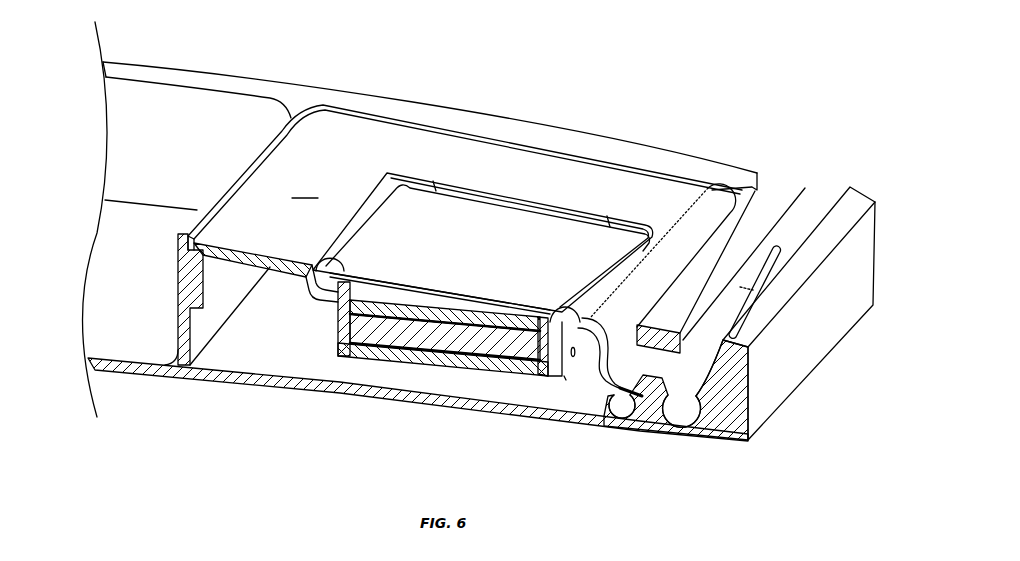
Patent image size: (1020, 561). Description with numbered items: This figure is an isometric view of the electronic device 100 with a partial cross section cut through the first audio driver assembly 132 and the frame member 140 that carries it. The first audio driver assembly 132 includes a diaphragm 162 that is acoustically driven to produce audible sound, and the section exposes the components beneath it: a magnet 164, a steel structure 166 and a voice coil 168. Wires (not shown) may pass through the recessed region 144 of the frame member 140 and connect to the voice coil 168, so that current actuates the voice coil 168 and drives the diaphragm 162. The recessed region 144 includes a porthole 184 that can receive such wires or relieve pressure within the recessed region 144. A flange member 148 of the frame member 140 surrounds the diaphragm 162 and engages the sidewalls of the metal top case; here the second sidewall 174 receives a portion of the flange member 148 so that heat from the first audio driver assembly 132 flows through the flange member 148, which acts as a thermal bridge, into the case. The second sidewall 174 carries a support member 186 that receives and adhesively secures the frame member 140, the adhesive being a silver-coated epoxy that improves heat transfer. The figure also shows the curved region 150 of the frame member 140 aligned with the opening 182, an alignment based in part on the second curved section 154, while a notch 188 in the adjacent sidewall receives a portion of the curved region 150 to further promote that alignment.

The electronic device 100 is at (754, 95).
The first audio driver assembly 132 is at (558, 188).
The frame member 140 is at (300, 100).
The recessed region 144 is at (367, 358).
The flange member 148 is at (775, 203).
The curved region 150 is at (682, 192).
The second curved section 154 is at (622, 370).
The diaphragm 162 is at (493, 259).
The magnet 164 is at (447, 352).
The steel structure 166 is at (480, 345).
The voice coil 168 is at (338, 330).
The second sidewall 174 is at (227, 173).
The opening 182 is at (684, 406).
The porthole 184 is at (573, 362).
The support member 186 is at (203, 278).
The notch 188 is at (662, 410).